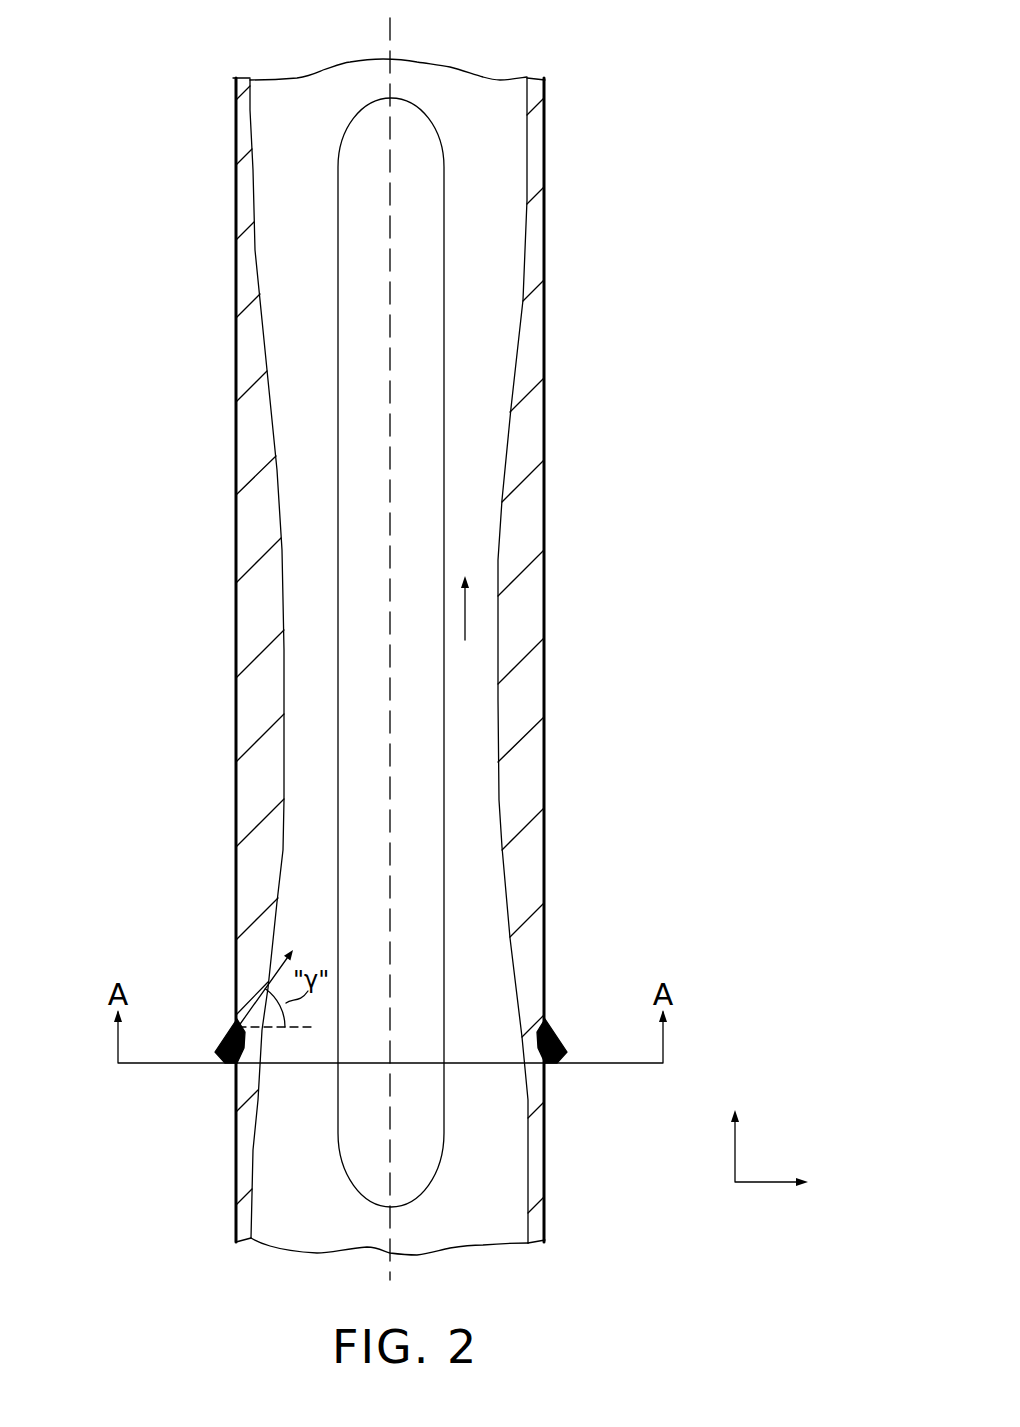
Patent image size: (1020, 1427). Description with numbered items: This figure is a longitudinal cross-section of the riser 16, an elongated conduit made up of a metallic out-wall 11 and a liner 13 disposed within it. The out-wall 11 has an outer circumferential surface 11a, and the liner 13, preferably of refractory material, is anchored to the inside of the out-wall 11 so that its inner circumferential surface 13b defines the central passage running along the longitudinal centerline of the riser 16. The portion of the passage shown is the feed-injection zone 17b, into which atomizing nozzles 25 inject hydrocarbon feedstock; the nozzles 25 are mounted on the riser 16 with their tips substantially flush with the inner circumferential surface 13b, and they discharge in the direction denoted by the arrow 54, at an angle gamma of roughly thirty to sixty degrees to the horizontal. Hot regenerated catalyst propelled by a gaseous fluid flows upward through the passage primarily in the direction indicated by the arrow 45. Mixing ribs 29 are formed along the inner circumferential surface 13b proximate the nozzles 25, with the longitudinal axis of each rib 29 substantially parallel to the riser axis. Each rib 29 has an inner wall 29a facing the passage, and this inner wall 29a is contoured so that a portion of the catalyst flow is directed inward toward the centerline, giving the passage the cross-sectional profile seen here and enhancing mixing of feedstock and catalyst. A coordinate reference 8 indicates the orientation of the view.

The coordinate axes 8 is at (752, 1184).
The out-wall 11 is at (549, 469).
The outer circumferential surface 11a is at (234, 249).
The liner 13 is at (246, 66).
The inner circumferential surface 13b is at (316, 133).
The riser 16 is at (219, 68).
The feed-injection zone 17b is at (514, 160).
The atomizing nozzle 25 is at (228, 1042).
The mixing rib 29 is at (444, 202).
The inner wall 29a is at (265, 367).
The arrow 45 is at (465, 640).
The arrow 54 is at (289, 946).